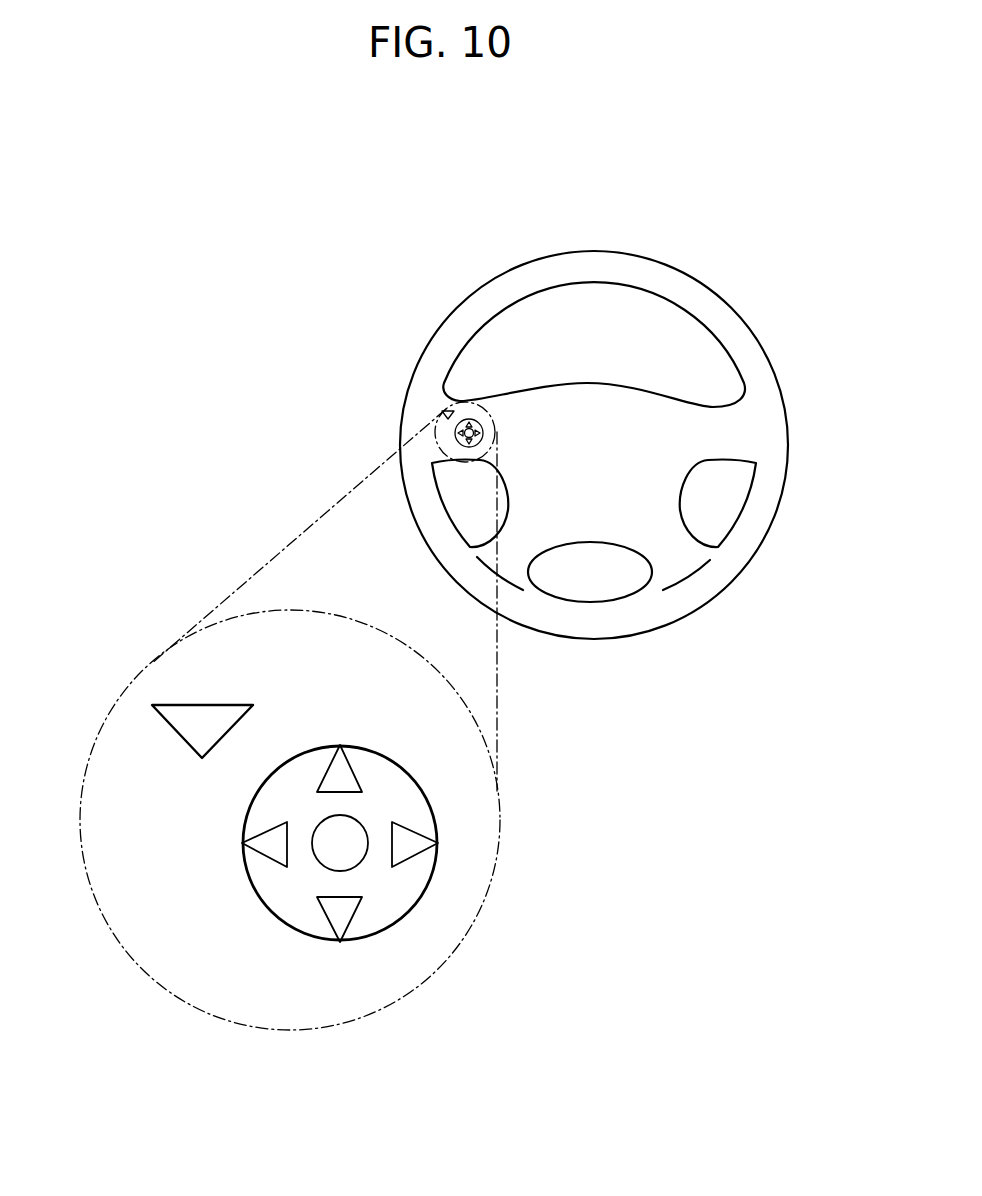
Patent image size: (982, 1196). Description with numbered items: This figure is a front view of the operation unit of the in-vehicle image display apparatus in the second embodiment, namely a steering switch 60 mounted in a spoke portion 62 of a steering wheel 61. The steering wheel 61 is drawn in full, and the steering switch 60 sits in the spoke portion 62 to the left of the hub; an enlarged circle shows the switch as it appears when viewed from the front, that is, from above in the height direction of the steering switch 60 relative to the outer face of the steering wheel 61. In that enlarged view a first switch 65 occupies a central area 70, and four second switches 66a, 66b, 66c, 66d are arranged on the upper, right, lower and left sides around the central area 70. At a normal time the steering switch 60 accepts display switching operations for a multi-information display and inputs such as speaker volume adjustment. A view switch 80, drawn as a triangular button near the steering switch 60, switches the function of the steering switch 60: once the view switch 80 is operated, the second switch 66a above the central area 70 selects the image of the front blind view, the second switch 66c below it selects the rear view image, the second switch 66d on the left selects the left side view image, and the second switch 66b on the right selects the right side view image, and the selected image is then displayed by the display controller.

The steering wheel 61 is at (592, 252).
The spoke portion 62 is at (463, 388).
The steering switch 60 is at (456, 434).
The view switch 80 is at (187, 704).
The second switch 66a is at (345, 773).
The second switch 66b is at (415, 842).
The second switch 66c is at (337, 915).
The second switch 66d is at (270, 838).
The first switch 65 is at (332, 855).
The central area 70 is at (374, 805).